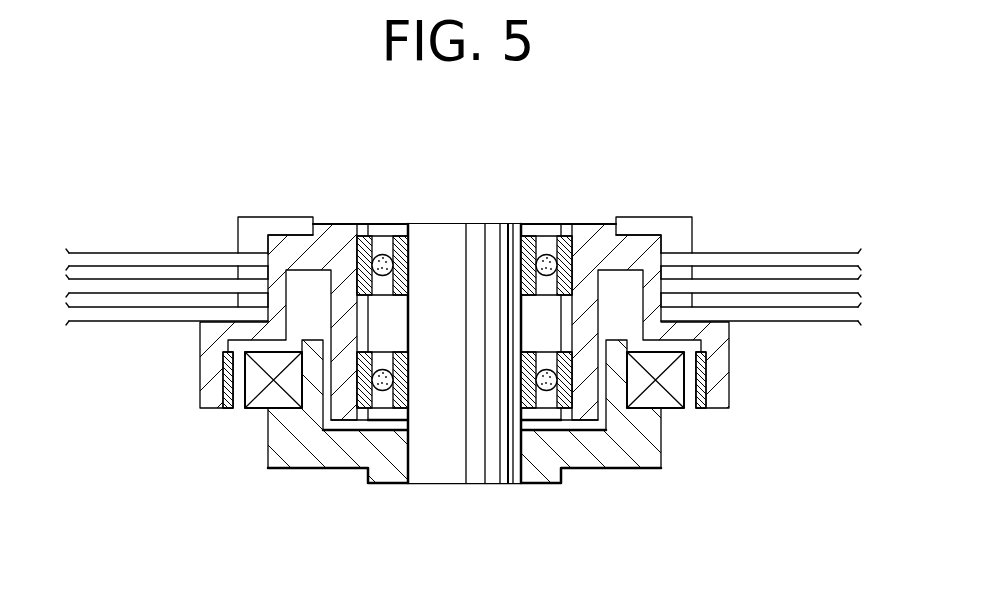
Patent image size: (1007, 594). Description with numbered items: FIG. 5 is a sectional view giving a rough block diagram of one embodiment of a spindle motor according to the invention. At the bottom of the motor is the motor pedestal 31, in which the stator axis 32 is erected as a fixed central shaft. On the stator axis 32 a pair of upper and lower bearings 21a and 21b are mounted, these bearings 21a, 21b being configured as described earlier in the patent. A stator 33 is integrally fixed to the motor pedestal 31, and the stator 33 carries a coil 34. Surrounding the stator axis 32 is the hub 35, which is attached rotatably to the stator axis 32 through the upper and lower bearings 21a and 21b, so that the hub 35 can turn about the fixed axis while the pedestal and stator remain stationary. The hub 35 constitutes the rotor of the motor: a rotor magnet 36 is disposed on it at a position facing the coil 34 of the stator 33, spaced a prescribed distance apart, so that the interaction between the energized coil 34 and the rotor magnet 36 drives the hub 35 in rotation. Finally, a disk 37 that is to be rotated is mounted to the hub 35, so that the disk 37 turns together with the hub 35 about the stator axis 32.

The upper bearing 21a is at (542, 238).
The lower bearing 21b is at (547, 410).
The motor pedestal 31 is at (383, 470).
The stator axis 32 is at (455, 238).
The stator 33 is at (648, 430).
The coil 34 is at (262, 398).
The hub 35 is at (636, 250).
The rotor magnet 36 is at (222, 377).
The disk 37 is at (793, 318).